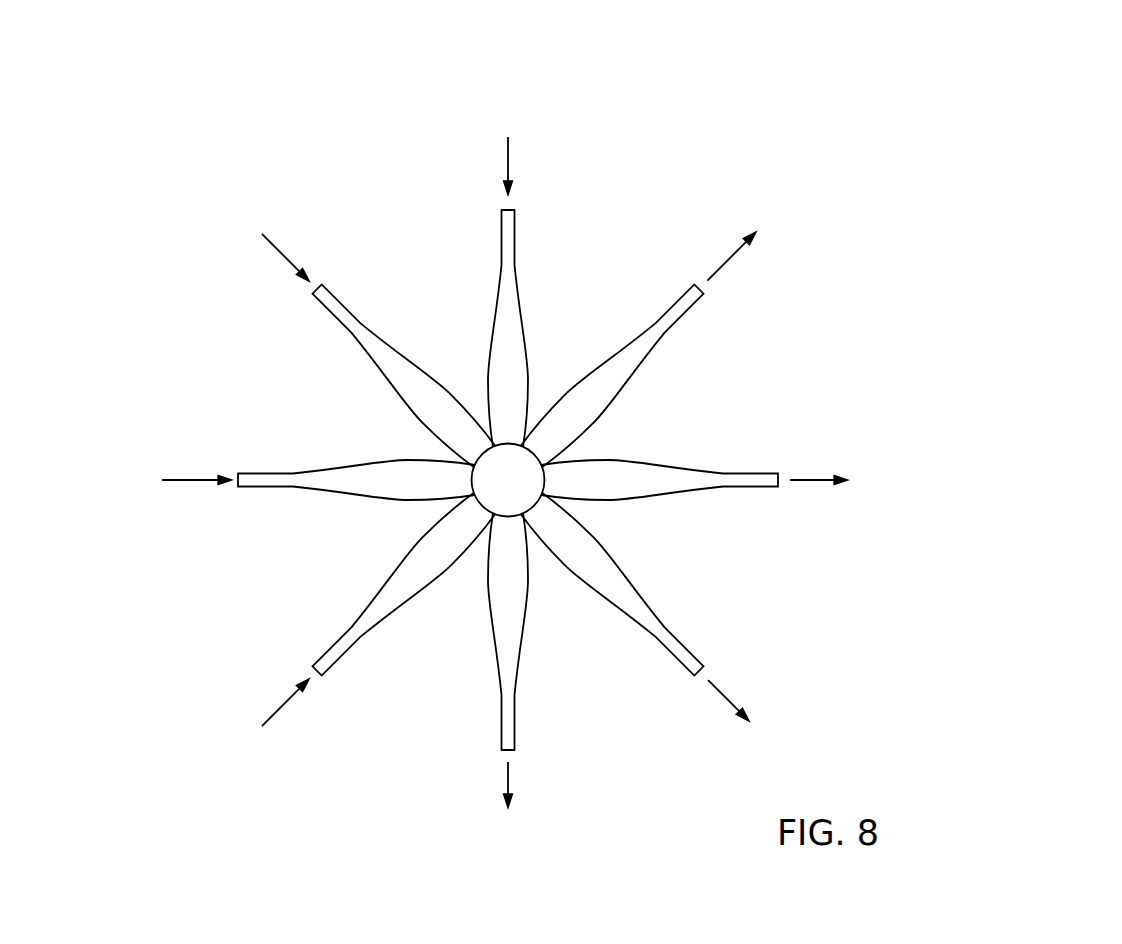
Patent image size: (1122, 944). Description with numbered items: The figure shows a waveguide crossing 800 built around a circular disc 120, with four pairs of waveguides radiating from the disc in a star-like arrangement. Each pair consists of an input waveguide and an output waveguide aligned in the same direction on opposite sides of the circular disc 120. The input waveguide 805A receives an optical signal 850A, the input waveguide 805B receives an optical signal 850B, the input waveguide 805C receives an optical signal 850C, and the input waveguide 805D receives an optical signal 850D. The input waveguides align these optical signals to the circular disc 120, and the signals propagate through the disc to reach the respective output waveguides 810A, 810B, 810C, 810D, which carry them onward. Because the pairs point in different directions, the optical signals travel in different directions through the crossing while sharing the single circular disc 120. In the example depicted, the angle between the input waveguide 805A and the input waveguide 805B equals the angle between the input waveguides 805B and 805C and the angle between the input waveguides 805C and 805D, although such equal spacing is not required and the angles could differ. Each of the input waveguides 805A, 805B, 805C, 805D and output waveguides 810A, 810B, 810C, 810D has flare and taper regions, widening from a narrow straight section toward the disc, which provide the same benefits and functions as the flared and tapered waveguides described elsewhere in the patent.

The waveguide crossing 800 is at (660, 439).
The circular disc 120 is at (527, 495).
The input waveguide 805A is at (502, 227).
The input waveguide 805B is at (368, 330).
The input waveguide 805C is at (293, 472).
The input waveguide 805D is at (328, 648).
The output waveguide 810A is at (518, 670).
The output waveguide 810B is at (657, 617).
The output waveguide 810C is at (702, 470).
The output waveguide 810D is at (615, 332).
The optical signal 850A is at (510, 160).
The optical signal 850B is at (280, 252).
The optical signal 850C is at (188, 478).
The optical signal 850D is at (280, 710).